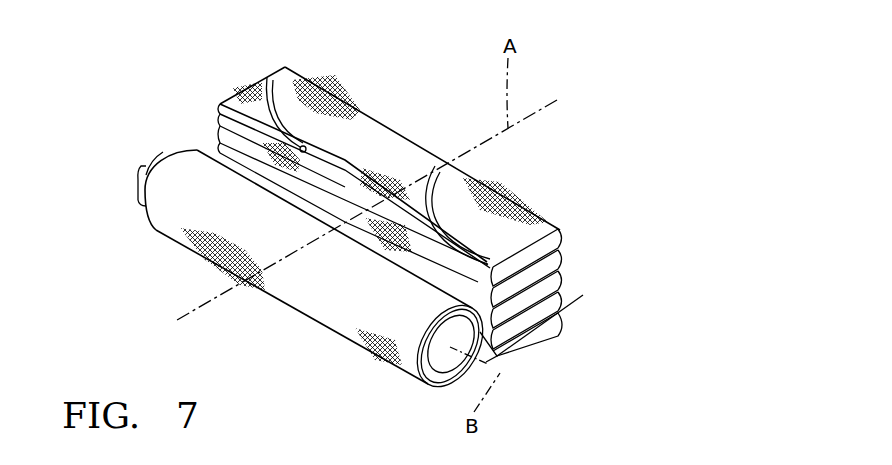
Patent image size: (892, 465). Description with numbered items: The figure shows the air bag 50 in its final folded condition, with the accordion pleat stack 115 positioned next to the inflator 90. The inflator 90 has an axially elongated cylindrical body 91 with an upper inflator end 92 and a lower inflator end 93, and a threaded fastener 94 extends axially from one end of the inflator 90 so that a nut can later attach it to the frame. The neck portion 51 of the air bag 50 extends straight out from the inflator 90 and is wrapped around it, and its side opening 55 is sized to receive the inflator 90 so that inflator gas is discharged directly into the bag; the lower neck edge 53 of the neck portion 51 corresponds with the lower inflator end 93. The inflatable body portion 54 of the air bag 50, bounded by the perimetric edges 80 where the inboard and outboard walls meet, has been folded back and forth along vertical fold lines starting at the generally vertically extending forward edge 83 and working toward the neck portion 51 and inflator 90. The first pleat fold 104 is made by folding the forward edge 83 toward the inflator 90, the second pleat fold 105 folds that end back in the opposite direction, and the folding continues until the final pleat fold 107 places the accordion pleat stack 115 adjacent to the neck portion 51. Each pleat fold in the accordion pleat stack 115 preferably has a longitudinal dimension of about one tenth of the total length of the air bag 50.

The air bag 50 is at (533, 163).
The neck portion 51 is at (492, 362).
The lower neck edge 53 is at (494, 355).
The inflatable body portion 54 is at (536, 212).
The side opening 55 is at (490, 356).
The perimetric edges 80 is at (331, 150).
The forward edge 83 is at (301, 145).
The inflator 90 is at (136, 200).
The cylindrical body 91 is at (163, 152).
The upper inflator end 92 is at (140, 188).
The lower inflator end 93 is at (443, 367).
The threaded fastener 94 is at (145, 168).
The first pleat fold 104 is at (373, 130).
The second pleat fold 105 is at (270, 137).
The final pleat fold 107 is at (547, 313).
The accordion pleat fold stack 115 is at (565, 238).